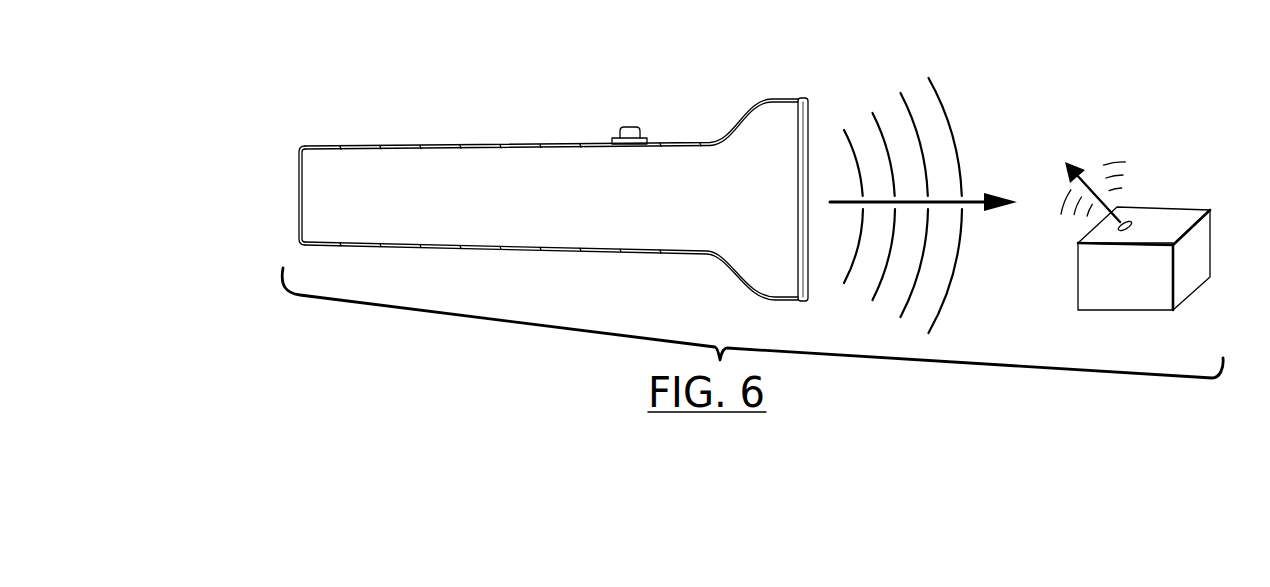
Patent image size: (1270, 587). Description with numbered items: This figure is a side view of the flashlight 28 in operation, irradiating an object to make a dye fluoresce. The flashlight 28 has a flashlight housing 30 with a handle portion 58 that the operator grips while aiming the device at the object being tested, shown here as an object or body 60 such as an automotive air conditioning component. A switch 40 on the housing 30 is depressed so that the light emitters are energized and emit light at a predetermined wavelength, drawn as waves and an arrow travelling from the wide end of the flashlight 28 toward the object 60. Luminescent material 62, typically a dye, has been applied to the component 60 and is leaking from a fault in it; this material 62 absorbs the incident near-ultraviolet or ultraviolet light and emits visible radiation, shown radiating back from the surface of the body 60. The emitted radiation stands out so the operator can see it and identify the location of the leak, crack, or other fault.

The flashlight 28 is at (487, 128).
The handle portion 58 is at (381, 146).
The flashlight housing 30 is at (480, 250).
The switch 40 is at (628, 128).
The object or body 60 is at (1130, 293).
The luminescent material 62 is at (1131, 222).